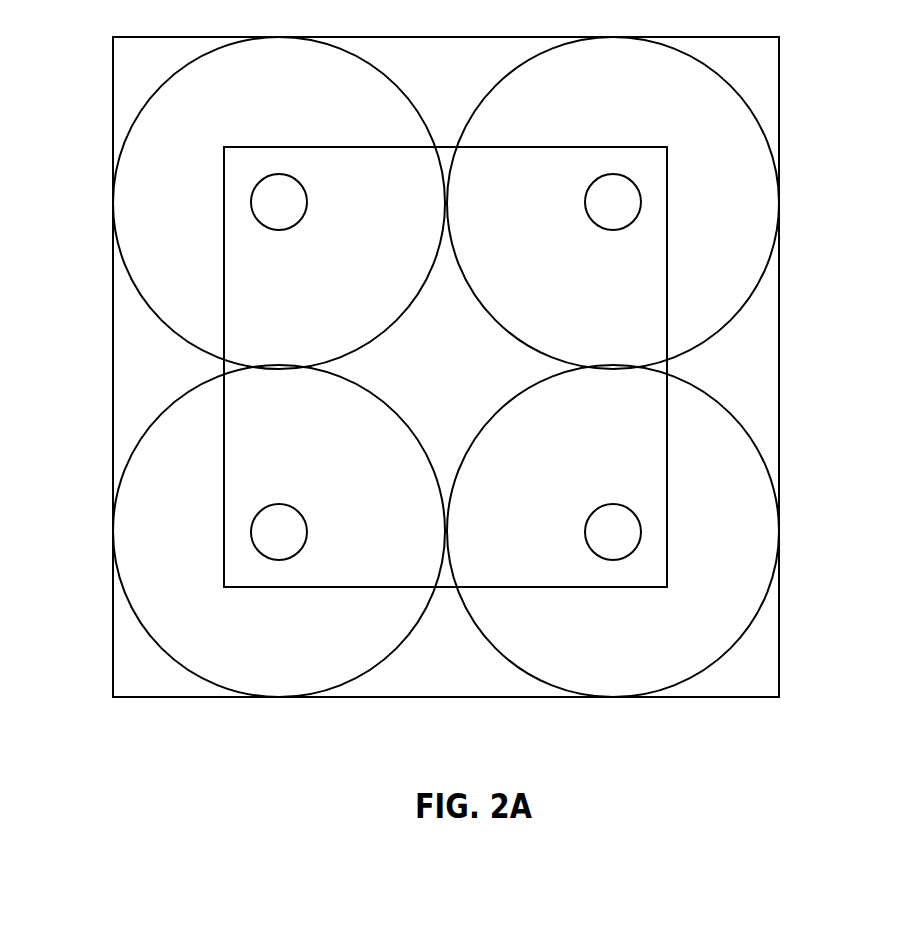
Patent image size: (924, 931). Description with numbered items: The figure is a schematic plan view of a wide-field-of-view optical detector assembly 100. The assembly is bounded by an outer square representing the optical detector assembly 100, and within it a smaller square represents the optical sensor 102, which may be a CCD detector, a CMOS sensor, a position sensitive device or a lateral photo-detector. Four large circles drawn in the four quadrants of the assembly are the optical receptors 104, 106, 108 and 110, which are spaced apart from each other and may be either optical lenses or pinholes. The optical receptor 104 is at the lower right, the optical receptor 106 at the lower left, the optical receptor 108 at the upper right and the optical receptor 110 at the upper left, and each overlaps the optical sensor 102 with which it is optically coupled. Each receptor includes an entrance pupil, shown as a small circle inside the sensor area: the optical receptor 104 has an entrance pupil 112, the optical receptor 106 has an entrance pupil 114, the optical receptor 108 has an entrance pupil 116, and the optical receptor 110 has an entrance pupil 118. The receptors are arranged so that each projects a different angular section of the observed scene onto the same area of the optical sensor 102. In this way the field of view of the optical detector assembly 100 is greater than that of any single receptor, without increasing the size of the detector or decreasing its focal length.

The WFOV optical detector assembly 100 is at (779, 642).
The optical sensor 102 is at (668, 215).
The optical receptor 104 is at (490, 422).
The optical receptor 106 is at (387, 408).
The optical receptor 108 is at (502, 77).
The optical receptor 110 is at (389, 77).
The entrance pupil 112 is at (613, 504).
The entrance pupil 114 is at (275, 503).
The entrance pupil 116 is at (612, 230).
The entrance pupil 118 is at (278, 230).